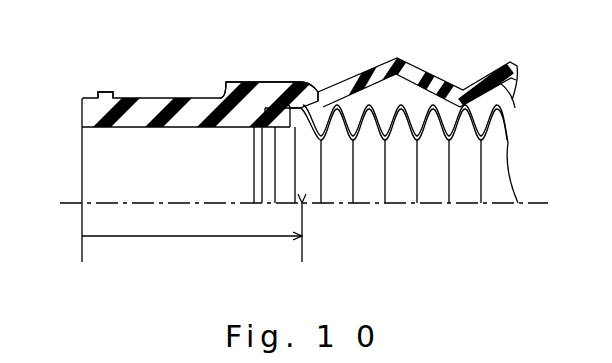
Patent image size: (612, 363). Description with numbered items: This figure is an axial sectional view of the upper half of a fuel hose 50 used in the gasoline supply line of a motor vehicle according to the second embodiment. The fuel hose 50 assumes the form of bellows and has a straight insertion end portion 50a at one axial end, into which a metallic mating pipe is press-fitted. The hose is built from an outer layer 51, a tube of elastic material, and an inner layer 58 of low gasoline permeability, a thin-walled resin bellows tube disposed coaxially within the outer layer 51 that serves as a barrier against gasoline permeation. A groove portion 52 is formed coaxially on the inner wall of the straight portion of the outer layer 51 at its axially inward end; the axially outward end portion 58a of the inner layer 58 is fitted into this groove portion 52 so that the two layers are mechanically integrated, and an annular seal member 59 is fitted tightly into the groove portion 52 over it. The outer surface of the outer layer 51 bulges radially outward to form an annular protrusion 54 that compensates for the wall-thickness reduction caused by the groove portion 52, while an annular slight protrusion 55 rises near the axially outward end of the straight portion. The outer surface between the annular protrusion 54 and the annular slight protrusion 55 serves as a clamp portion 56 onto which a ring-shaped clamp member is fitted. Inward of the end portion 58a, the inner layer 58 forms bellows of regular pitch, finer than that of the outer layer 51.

The fuel hose 50 is at (307, 78).
The insertion end portion 50a is at (192, 236).
The outer layer 51 is at (365, 74).
The groove portion 52 is at (270, 106).
The annular protrusion 54 is at (255, 82).
The annular slight protrusion 55 is at (104, 92).
The clamp portion 56 is at (145, 98).
The inner layer 58 is at (508, 108).
The axially outward end portion 58a is at (313, 152).
The annular seal member 59 is at (277, 132).